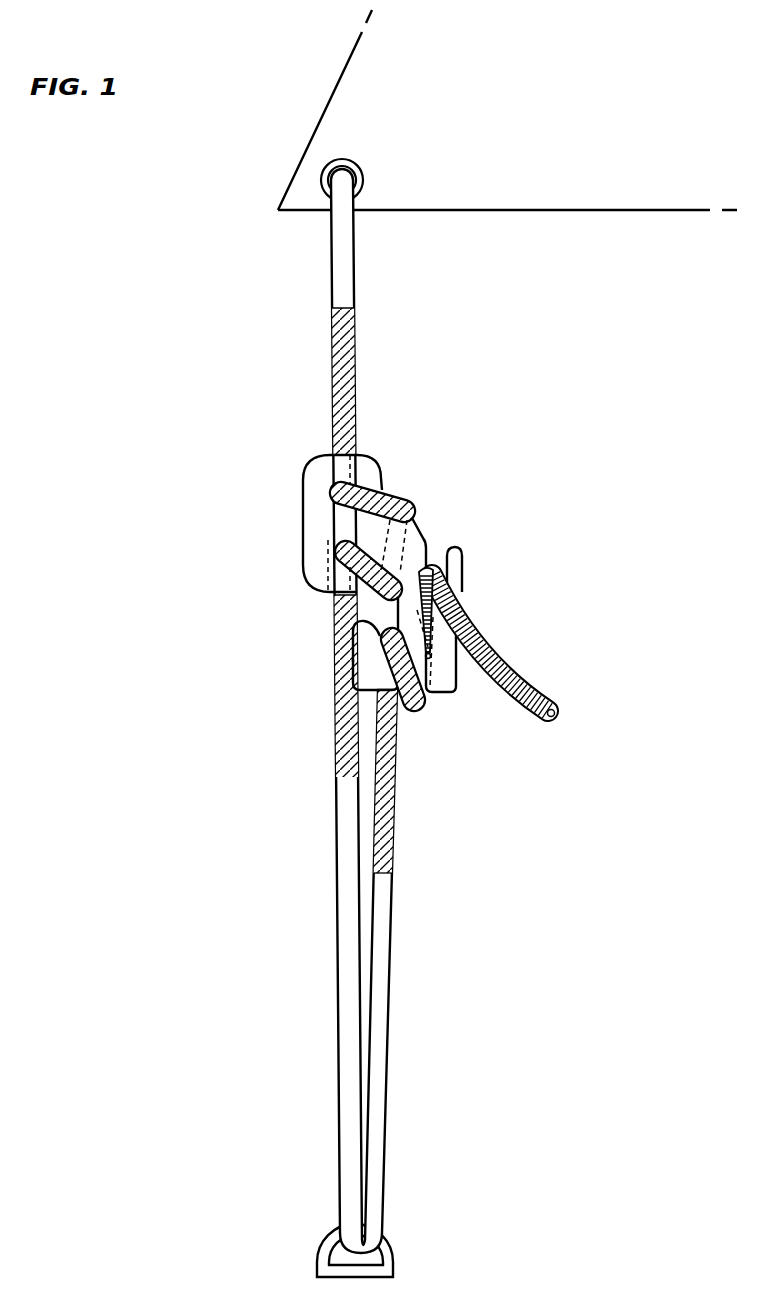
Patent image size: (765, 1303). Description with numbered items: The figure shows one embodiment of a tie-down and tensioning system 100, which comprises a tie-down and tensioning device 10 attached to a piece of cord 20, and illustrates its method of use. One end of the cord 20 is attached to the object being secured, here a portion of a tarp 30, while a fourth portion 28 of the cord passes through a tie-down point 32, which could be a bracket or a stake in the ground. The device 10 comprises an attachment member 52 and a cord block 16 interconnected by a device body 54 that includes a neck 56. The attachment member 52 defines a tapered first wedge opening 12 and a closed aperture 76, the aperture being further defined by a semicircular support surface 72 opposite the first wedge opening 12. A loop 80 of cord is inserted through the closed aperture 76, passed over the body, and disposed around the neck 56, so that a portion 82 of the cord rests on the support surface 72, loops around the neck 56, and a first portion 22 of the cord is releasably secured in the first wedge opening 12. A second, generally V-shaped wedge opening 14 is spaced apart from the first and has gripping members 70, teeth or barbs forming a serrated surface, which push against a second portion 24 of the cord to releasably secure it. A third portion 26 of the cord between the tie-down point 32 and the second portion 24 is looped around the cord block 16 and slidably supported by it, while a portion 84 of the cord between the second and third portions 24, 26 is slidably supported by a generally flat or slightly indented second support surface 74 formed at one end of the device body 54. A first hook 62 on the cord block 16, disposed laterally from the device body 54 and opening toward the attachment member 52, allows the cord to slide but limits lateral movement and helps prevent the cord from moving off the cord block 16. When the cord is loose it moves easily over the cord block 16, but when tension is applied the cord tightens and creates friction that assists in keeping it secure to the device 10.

The tie-down and tensioning device 10 is at (291, 518).
The first wedge opening 12 is at (335, 588).
The second wedge opening 14 is at (470, 628).
The cord block 16 is at (368, 644).
The cord 20 is at (333, 350).
The first portion of cord 22 is at (330, 557).
The second portion of cord 24 is at (457, 550).
The third portion of cord 26 is at (423, 716).
The fourth portion of cord 28 is at (343, 1174).
The tarp 30 is at (323, 111).
The tie-down point 32 is at (393, 1265).
The attachment member 52 is at (380, 472).
The device body 54 is at (447, 672).
The neck 56 is at (403, 540).
The first hook 62 is at (344, 626).
The gripping members 70 is at (458, 598).
The support surface 72 is at (330, 476).
The second support surface 74 is at (435, 700).
The closed aperture 76 is at (340, 518).
The loop of cord 80 is at (410, 498).
The portion of cord 82 is at (363, 456).
The portion of cord 84 is at (404, 715).
The tie-down and tensioning system 100 is at (256, 744).